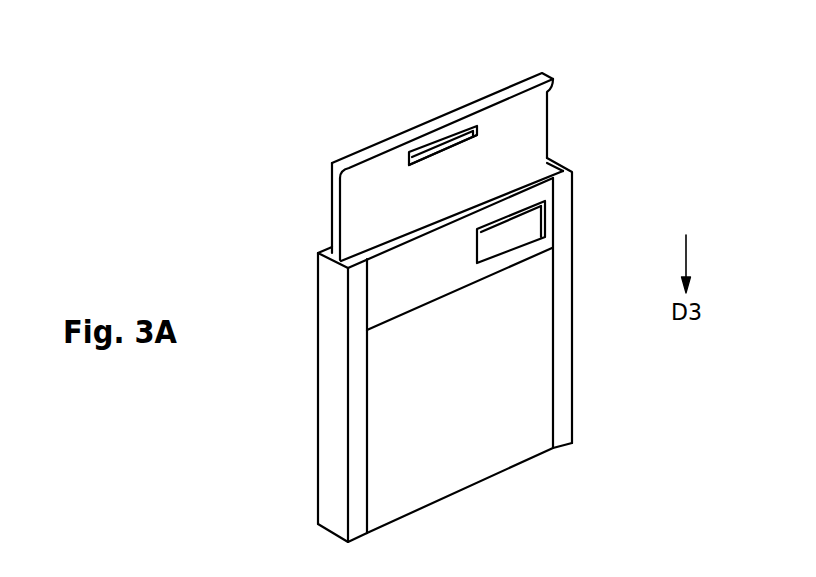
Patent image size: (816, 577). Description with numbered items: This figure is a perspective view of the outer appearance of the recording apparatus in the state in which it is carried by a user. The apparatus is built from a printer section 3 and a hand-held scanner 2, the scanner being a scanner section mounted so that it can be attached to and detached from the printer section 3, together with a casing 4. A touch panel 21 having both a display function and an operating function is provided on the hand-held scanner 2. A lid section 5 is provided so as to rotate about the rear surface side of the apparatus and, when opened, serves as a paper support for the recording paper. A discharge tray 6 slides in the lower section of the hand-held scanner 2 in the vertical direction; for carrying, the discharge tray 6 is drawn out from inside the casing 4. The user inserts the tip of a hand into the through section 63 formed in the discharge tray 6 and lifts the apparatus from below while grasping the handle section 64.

The hand-held scanner 2 is at (378, 296).
The printer section 3 is at (308, 382).
The casing 4 is at (326, 452).
The lid section 5 is at (537, 368).
The discharge tray 6 is at (512, 107).
The touch panel 21 is at (534, 219).
The through section 63 is at (456, 148).
The handle section 64 is at (442, 138).